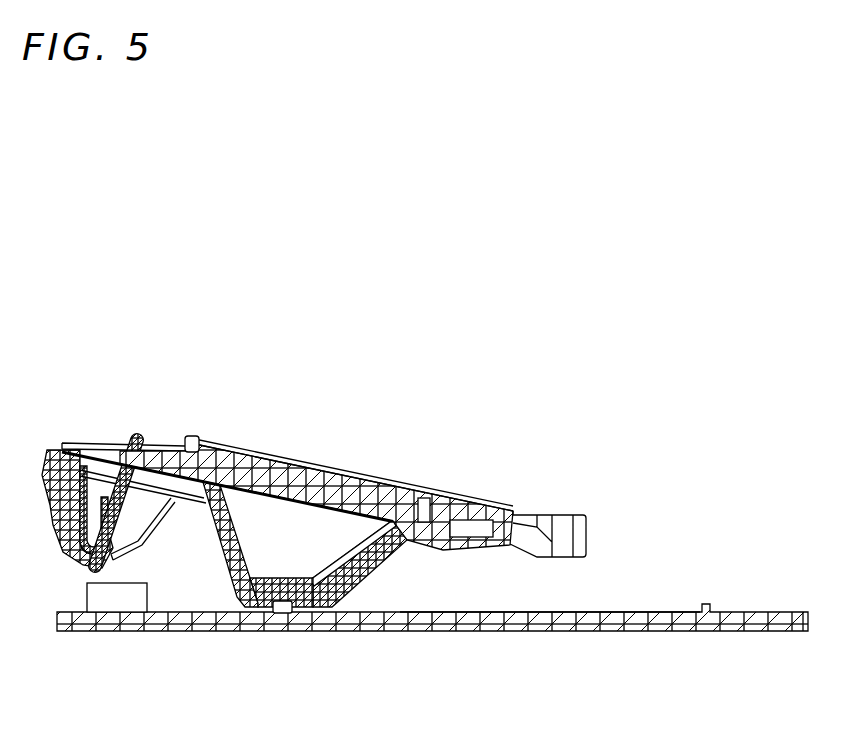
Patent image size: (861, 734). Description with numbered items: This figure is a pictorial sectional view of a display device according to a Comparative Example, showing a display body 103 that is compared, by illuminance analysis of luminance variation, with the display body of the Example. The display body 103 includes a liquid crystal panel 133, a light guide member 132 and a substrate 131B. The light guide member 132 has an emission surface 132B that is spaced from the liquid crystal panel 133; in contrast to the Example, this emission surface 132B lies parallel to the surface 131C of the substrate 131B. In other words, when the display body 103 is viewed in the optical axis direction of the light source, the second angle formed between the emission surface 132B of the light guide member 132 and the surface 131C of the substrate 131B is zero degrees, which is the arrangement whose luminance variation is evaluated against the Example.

The display body 103 is at (314, 517).
The liquid crystal panel 133 is at (306, 478).
The emission surface 132B is at (302, 578).
The light guide member 132 is at (282, 614).
The surface 131C is at (613, 608).
The substrate 131B is at (663, 621).